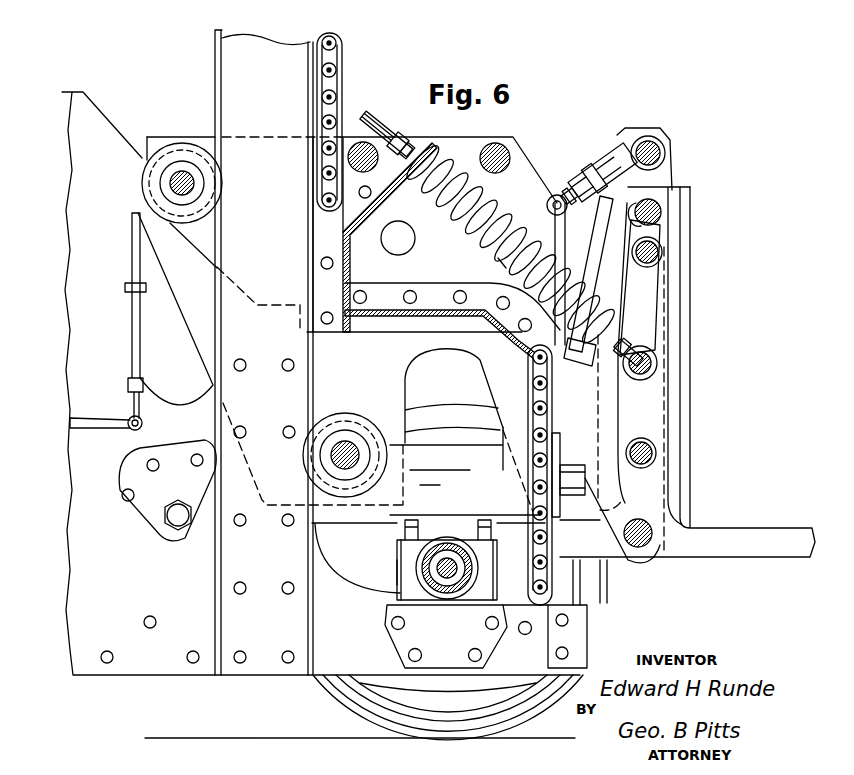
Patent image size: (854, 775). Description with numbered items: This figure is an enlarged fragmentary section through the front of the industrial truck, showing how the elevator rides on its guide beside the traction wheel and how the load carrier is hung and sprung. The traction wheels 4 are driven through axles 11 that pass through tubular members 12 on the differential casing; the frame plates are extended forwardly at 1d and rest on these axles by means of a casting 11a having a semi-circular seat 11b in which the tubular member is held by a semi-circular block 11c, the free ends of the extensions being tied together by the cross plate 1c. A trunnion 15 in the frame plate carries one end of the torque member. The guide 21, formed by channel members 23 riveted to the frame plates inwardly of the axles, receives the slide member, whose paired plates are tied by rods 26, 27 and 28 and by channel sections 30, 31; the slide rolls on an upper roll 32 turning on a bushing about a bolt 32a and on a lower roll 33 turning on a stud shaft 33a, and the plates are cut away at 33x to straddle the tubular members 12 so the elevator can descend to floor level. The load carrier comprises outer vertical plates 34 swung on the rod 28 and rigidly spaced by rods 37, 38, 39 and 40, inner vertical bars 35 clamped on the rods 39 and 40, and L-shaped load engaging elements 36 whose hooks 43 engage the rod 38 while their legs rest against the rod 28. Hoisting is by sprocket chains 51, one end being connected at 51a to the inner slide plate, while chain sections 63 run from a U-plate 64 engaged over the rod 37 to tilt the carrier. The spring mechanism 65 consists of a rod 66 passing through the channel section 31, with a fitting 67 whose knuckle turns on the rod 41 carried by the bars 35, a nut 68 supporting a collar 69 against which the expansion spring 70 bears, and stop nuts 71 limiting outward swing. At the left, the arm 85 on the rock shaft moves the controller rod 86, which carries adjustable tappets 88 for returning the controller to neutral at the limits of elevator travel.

The traction wheels 4 is at (338, 700).
The cross member plate 1c is at (590, 640).
The forward extensions of plates 1d is at (478, 678).
The axles 11 is at (447, 585).
The casting 11a is at (396, 640).
The semi-circular seat 11b is at (393, 590).
The semi-circular block 11c is at (397, 548).
The tubular members 12 is at (478, 561).
The trunnion 15 is at (165, 528).
The vertical guide 21 is at (267, 354).
The channel members 23 is at (213, 88).
The rod 26 is at (362, 142).
The rod 27 is at (510, 156).
The rod 28 is at (630, 556).
The channel section 30 is at (432, 316).
The channel section 31 is at (348, 286).
The upper rolls 32 is at (161, 168).
The bolt 32a is at (162, 181).
The lower rolls 33 is at (328, 443).
The stud shaft 33a is at (335, 462).
The cut away 33x is at (405, 378).
The outer vertical plates 34 is at (600, 222).
The inner vertical bars 35 is at (655, 296).
The load engaging elements 36 is at (715, 530).
The rod 37 is at (666, 148).
The rod 38 is at (663, 212).
The rod 39 is at (663, 252).
The rod 40 is at (630, 466).
The rod 41 is at (638, 376).
The hooks 43 is at (628, 218).
The sprocket chains 51 is at (335, 95).
The chain connection 51a is at (527, 358).
The chain sections 63 is at (557, 195).
The U-plate 64 is at (647, 135).
The spring mechanism 65 is at (460, 255).
The rod 66 is at (385, 124).
The fitting 67 is at (638, 346).
The nut 68 is at (586, 352).
The collar 69 is at (618, 318).
The expansion spring 70 is at (500, 260).
The nuts 71 is at (410, 142).
The arm 85 is at (106, 430).
The rod 86 is at (140, 345).
The tappets 88 is at (124, 287).